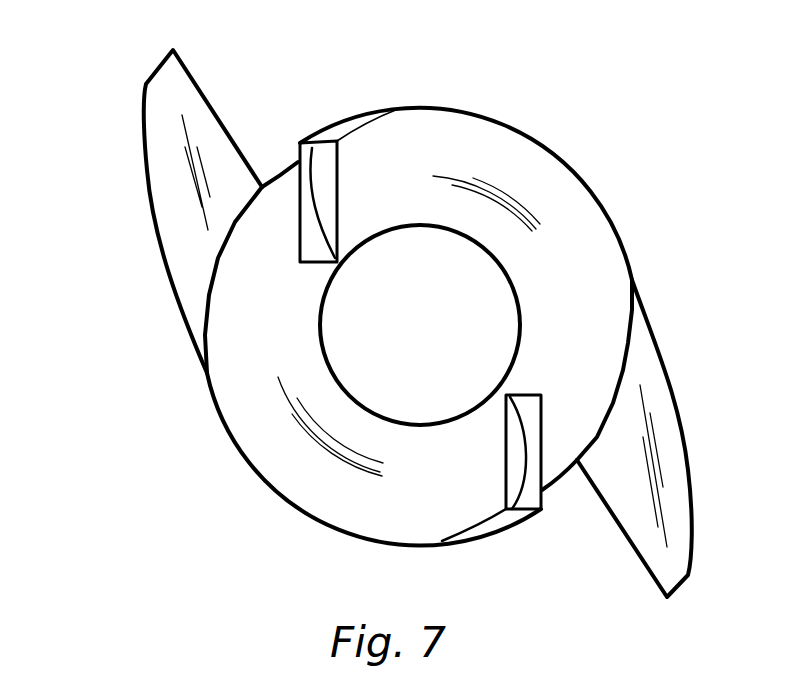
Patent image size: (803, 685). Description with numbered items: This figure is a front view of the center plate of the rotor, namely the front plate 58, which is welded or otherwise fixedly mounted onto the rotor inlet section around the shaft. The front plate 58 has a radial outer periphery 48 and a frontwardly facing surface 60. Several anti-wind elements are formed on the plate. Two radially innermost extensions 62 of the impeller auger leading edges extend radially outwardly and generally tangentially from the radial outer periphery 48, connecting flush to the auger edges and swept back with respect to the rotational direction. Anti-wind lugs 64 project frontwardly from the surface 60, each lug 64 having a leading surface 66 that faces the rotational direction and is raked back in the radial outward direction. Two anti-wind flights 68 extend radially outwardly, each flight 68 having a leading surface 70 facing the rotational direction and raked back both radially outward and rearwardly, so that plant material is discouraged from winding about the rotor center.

The radial outer periphery 48 is at (230, 440).
The front plate 58 is at (607, 215).
The frontwardly facing surface 60 is at (327, 483).
The radially innermost extensions 62 is at (147, 200).
The anti-wind lug 64 is at (314, 147).
The leading surface 66 is at (297, 237).
The anti-wind flight 68 is at (390, 107).
The leading surface 70 is at (293, 157).